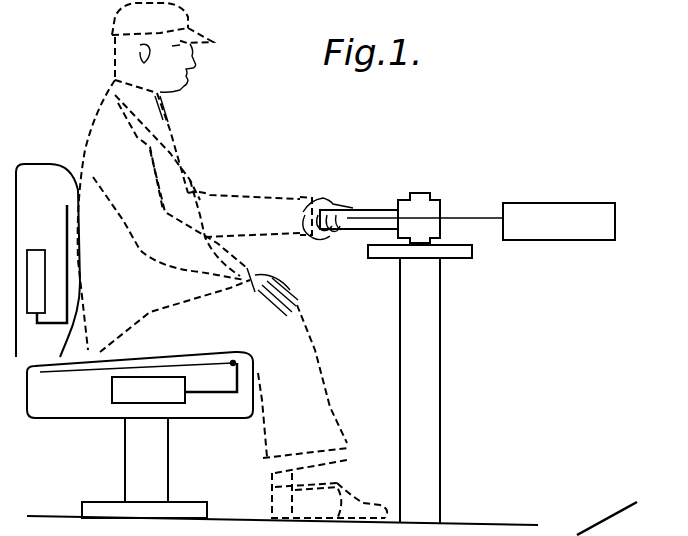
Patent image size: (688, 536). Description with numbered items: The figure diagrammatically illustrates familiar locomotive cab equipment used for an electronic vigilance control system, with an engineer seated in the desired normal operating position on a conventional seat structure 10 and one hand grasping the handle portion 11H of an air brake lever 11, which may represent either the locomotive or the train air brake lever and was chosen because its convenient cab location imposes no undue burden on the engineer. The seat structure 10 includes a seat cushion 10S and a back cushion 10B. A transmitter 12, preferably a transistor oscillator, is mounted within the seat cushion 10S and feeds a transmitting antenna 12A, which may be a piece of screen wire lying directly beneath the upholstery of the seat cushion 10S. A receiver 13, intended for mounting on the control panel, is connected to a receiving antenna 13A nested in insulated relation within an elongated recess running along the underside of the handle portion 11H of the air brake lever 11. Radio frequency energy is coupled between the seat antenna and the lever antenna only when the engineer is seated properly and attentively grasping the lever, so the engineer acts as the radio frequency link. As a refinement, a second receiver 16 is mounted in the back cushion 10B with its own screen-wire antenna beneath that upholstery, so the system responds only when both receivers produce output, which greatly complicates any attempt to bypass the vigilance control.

The seat structure 10 is at (108, 437).
The back cushion 10B is at (38, 168).
The seat cushion 10S is at (230, 408).
The air brake lever 11 is at (387, 208).
The handle portion 11H is at (353, 207).
The transmitter 12 is at (112, 391).
The transmitting antenna 12A is at (140, 350).
The receiver 13 is at (558, 203).
The receiving antenna 13A is at (333, 220).
The second receiver 16 is at (36, 256).